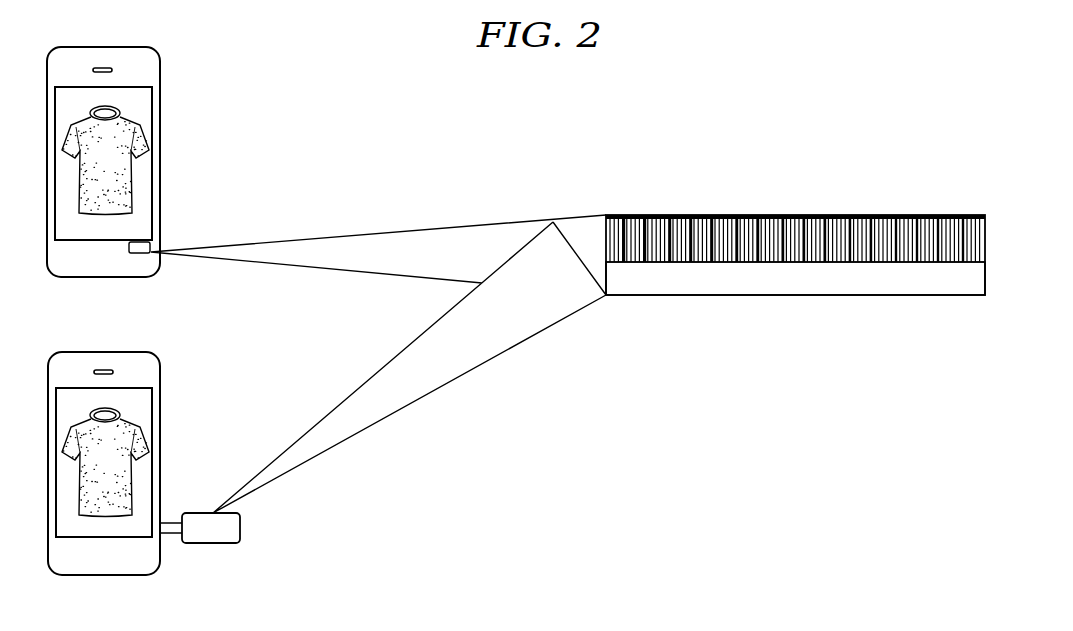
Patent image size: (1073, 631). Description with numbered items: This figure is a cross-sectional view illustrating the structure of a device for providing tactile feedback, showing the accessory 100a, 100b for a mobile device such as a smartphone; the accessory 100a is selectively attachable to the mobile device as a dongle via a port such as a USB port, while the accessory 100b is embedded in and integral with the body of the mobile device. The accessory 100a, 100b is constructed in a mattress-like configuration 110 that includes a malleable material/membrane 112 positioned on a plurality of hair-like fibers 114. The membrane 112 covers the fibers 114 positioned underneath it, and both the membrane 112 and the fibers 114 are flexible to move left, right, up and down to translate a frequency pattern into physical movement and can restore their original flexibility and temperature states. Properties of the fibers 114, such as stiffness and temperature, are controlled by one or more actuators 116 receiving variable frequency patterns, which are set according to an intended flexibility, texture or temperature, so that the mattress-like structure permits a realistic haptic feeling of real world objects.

The accessory 100a is at (212, 543).
The accessory 100b is at (142, 253).
The mattress-like configuration 110 is at (833, 265).
The malleable material/membrane 112 is at (987, 217).
The hair-like fibers 114 is at (987, 240).
The actuators 116 is at (606, 303).